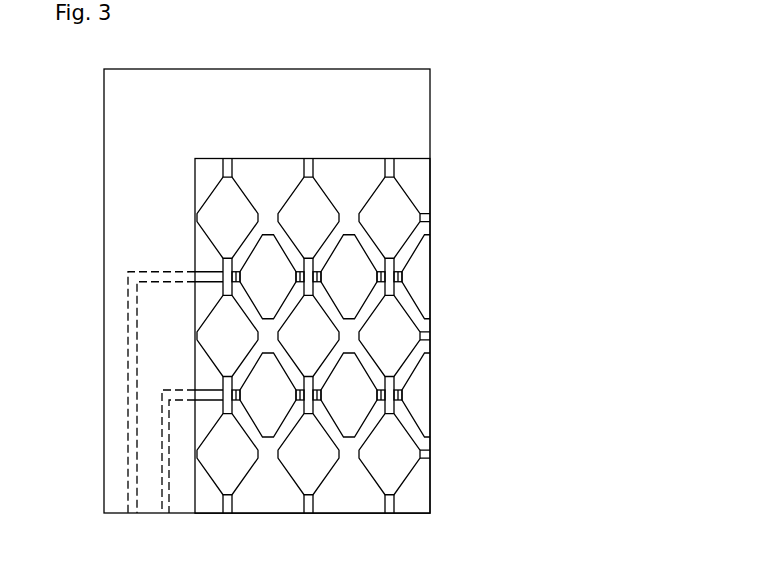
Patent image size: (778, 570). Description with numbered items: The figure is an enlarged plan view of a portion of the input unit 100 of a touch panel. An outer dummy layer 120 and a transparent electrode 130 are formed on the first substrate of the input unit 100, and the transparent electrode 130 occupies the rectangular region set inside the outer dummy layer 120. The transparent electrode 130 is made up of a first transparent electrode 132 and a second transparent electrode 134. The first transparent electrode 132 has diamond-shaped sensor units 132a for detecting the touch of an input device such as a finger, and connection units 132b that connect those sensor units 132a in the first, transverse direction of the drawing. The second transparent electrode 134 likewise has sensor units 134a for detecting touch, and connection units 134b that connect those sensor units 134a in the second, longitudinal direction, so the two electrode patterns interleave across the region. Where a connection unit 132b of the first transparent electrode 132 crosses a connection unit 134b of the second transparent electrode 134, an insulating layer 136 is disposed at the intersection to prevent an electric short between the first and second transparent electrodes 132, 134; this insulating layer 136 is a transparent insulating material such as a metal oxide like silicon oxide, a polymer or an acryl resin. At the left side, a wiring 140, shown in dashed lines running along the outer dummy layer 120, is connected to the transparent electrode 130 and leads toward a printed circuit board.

The input unit 100 is at (129, 50).
The outer dummy layer 120 is at (420, 115).
The transparent electrode 130 is at (515, 296).
The first transparent electrode 132 is at (476, 372).
The sensor unit 132a is at (357, 384).
The connection unit 132b is at (402, 396).
The second transparent electrode 134 is at (476, 284).
The sensor unit 134a is at (397, 331).
The connection unit 134b is at (401, 279).
The insulating layer 136 is at (402, 399).
The wiring 140 is at (160, 466).